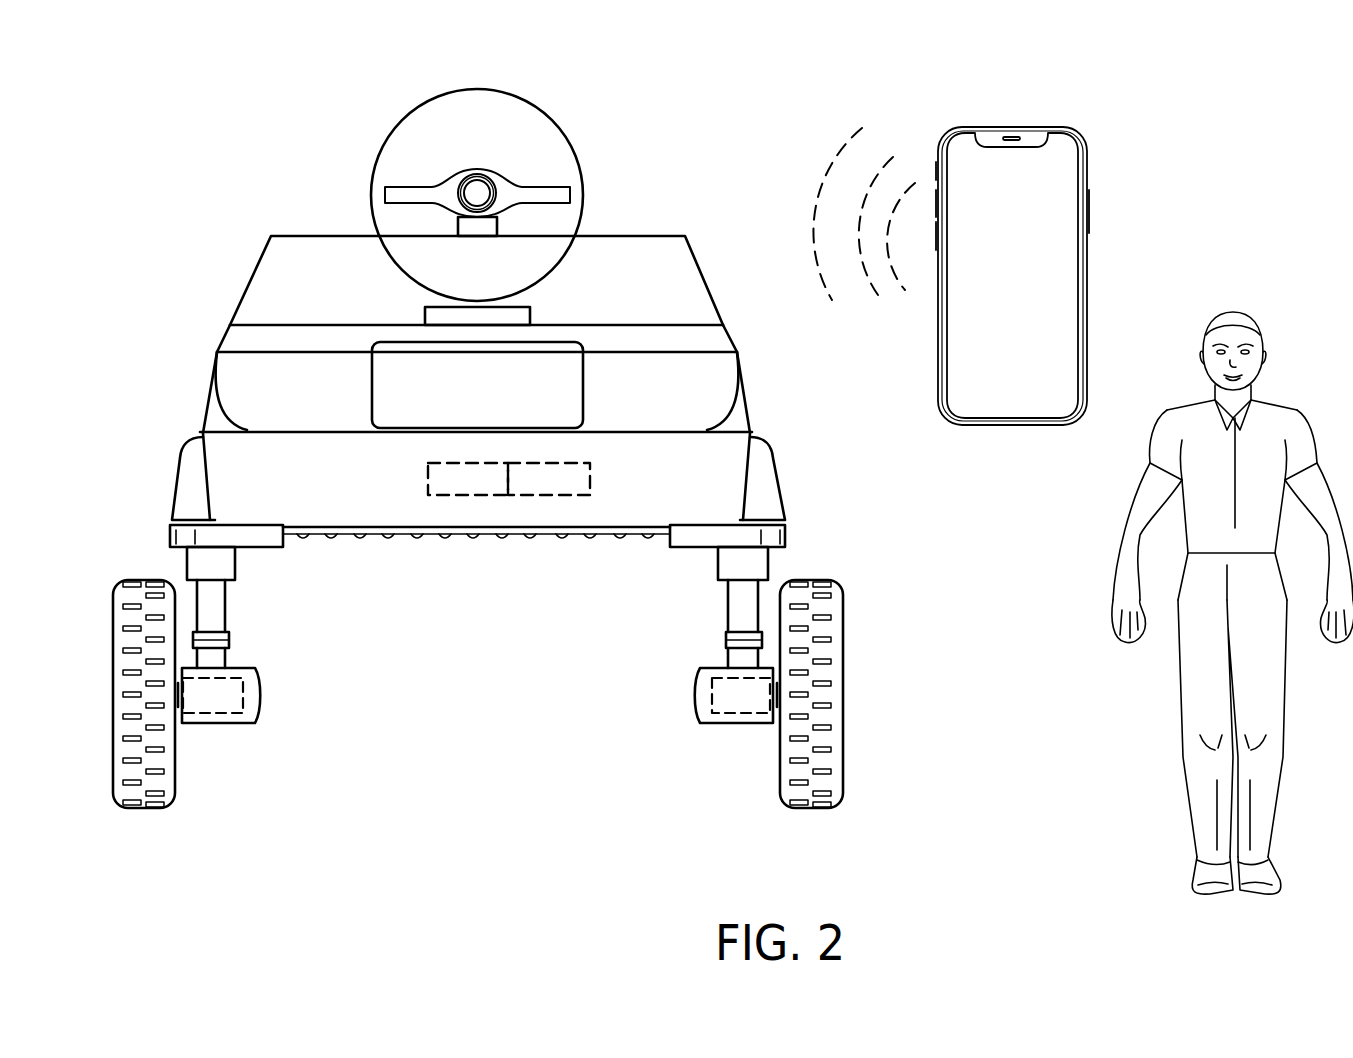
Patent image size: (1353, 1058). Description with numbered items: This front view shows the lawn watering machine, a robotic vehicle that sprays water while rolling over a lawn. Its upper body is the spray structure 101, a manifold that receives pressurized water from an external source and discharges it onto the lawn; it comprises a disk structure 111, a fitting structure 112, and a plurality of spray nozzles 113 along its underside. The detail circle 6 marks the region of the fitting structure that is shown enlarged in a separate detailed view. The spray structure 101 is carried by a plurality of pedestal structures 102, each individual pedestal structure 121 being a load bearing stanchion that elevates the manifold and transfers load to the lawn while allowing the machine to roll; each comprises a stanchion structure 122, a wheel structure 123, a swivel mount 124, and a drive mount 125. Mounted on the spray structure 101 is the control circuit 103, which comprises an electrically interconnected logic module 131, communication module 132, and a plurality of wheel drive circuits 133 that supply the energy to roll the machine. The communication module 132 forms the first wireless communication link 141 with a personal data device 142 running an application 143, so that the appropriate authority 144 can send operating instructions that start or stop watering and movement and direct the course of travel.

The detail circle 6 is at (403, 120).
The spray structure 101 is at (205, 145).
The plurality of pedestal structures 102 is at (800, 880).
The control circuit 103 is at (784, 181).
The disk structure 111 is at (260, 493).
The fitting structure 112 is at (458, 224).
The plurality of spray nozzles 113 is at (313, 533).
The individual pedestal structure 121 is at (163, 808).
The stanchion structure 122 is at (757, 607).
The wheel structure 123 is at (833, 652).
The swivel mount 124 is at (725, 640).
The drive mount 125 is at (735, 725).
The logic module 131 is at (465, 470).
The communication module 132 is at (560, 473).
The plurality of wheel drive circuits 133 is at (700, 693).
The first wireless communication link 141 is at (932, 183).
The personal data device 142 is at (1047, 127).
The application 143 is at (1048, 207).
The appropriate authority 144 is at (1160, 673).